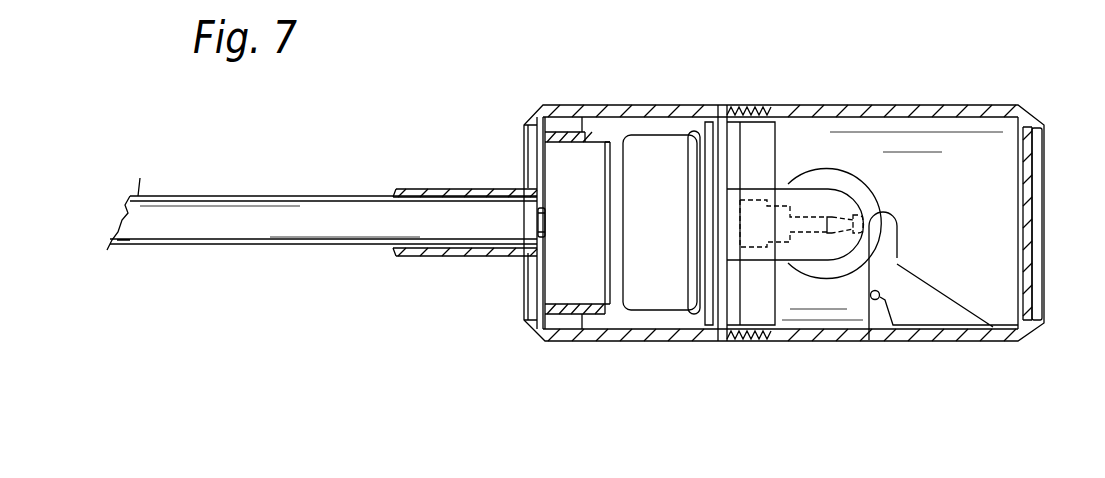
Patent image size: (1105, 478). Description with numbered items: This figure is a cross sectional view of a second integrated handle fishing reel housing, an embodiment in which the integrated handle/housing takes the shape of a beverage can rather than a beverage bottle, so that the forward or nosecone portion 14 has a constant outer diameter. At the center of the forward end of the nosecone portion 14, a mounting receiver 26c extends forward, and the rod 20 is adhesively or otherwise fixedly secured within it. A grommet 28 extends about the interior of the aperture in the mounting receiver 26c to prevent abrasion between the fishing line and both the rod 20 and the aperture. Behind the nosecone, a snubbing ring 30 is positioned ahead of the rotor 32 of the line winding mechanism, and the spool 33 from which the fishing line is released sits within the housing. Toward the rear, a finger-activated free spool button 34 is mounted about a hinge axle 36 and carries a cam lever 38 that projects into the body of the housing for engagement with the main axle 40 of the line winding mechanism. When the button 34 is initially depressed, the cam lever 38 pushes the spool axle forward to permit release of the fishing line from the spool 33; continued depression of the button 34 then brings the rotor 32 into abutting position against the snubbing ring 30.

The forward or nosecone portion 14 is at (545, 207).
The rod 20 is at (303, 196).
The mounting receiver 26c is at (480, 189).
The grommet 28 is at (548, 205).
The snubbing ring 30 is at (610, 157).
The rotor 32 is at (655, 285).
The spool 33 is at (712, 135).
The finger-activated free spool button 34 is at (933, 333).
The hinge axle 36 is at (873, 299).
The cam lever 38 is at (890, 262).
The main axle 40 is at (823, 208).